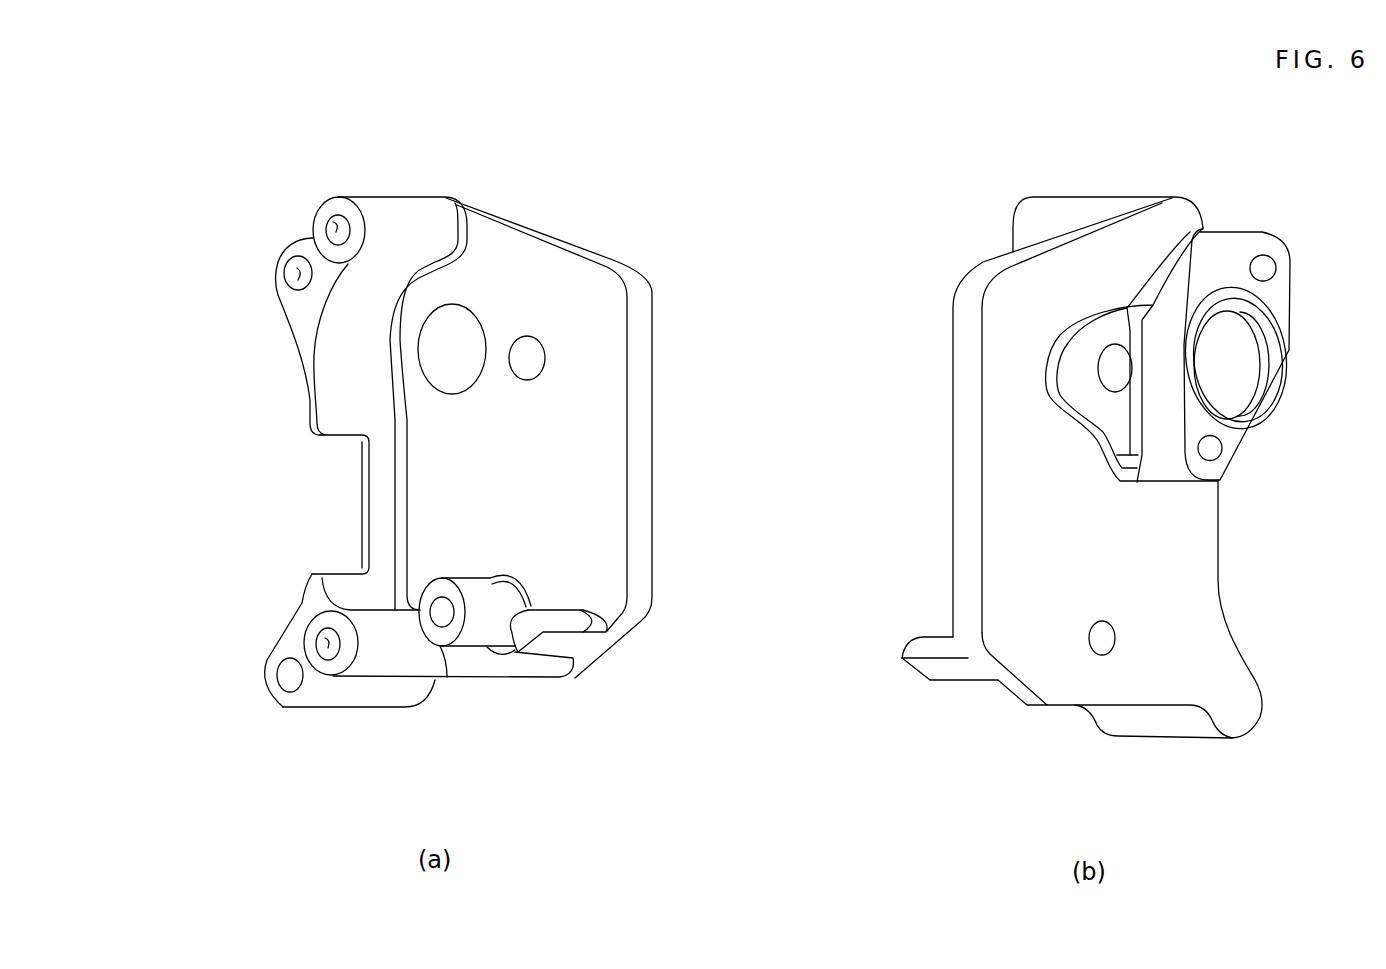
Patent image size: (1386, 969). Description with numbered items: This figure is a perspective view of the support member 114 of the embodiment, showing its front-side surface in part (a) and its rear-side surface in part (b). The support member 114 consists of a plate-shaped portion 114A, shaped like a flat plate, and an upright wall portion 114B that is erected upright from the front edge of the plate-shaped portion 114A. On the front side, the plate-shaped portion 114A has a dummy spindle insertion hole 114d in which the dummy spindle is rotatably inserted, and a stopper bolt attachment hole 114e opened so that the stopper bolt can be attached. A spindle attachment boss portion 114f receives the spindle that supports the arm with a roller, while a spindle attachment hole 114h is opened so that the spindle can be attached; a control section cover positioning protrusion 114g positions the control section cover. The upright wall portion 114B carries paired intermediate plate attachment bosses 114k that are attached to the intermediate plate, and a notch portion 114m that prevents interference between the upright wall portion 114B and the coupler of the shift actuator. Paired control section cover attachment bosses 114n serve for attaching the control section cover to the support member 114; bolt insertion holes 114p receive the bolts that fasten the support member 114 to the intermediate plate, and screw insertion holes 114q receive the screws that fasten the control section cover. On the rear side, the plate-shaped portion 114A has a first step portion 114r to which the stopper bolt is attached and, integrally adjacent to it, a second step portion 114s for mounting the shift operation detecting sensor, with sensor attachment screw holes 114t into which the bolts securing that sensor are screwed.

The support member 114 is at (275, 182).
The plate-shaped portion 114A is at (573, 283).
The upright wall portion 114B is at (397, 193).
The dummy spindle insertion hole 114d is at (452, 348).
The stopper bolt attachment hole 114e is at (527, 358).
The spindle attachment boss portion 114f is at (475, 637).
The control section cover positioning protrusion 114g is at (562, 612).
The spindle attachment hole 114h is at (442, 630).
The intermediate plate attachment boss 114k is at (285, 262).
The notch portion 114m is at (369, 503).
The control section cover attachment boss 114n is at (330, 210).
The bolt insertion hole 114p is at (292, 285).
The screw insertion hole 114q is at (333, 227).
The first step portion 114r is at (1103, 330).
The second step portion 114s is at (1268, 243).
The sensor attachment screw hole 114t is at (1272, 271).